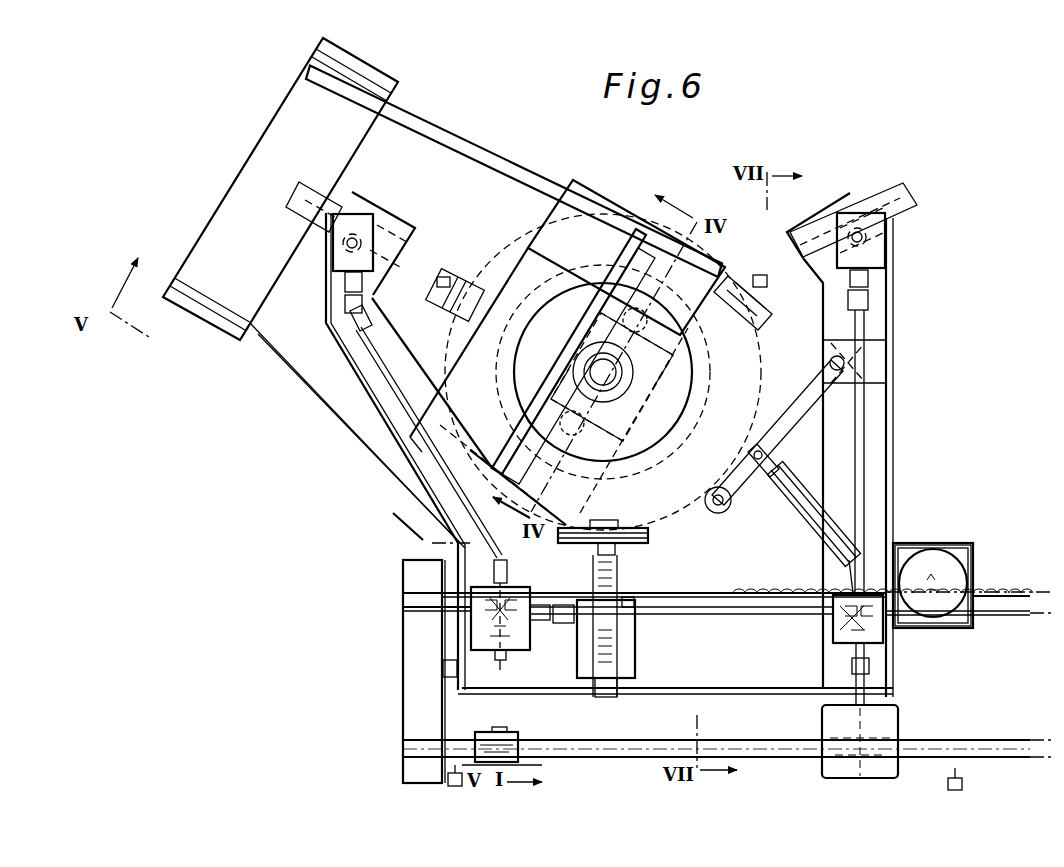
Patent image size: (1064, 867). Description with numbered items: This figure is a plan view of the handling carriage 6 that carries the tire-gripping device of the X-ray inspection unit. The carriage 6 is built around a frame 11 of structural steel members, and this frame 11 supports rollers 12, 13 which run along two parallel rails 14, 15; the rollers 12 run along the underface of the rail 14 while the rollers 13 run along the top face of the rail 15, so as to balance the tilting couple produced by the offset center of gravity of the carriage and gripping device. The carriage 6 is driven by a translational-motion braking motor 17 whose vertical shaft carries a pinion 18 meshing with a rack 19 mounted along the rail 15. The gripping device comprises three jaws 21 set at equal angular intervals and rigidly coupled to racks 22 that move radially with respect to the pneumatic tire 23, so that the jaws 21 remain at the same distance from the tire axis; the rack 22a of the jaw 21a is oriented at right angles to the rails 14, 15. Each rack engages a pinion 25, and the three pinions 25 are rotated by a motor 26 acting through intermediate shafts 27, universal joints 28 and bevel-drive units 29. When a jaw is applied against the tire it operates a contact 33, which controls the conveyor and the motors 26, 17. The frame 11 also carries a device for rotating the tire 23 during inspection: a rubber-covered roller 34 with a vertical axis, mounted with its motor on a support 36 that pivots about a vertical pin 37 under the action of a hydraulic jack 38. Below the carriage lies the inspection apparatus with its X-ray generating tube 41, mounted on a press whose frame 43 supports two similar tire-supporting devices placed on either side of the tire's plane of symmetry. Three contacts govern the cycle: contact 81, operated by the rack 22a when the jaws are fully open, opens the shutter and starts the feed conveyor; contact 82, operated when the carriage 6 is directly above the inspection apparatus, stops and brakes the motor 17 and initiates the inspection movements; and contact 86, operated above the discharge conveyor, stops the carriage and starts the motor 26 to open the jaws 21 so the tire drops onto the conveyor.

The handling carriage 6 is at (924, 636).
The frame 11 is at (410, 450).
The rollers 12 is at (490, 732).
The rollers 13 is at (523, 627).
The rail 14 is at (997, 747).
The rail 15 is at (1015, 614).
The translational-motion braking motor 17 is at (960, 568).
The pinion 18 is at (931, 576).
The rack 19 is at (988, 592).
The jaws 21 is at (474, 292).
The jaw 21a is at (607, 523).
The racks 22 is at (297, 197).
The rack 22a is at (614, 576).
The pneumatic tire 23 is at (502, 250).
The pinion 25 is at (340, 247).
The motor 26 is at (895, 720).
The intermediate shafts 27 is at (377, 363).
The universal joints 28 is at (346, 318).
The bevel-drive units 29 is at (355, 214).
The contact 33 is at (455, 272).
The rubber-covered roller 34 is at (723, 513).
The support 36 is at (777, 433).
The vertical pin 37 is at (829, 361).
The hydraulic jack 38 is at (794, 503).
The X-ray generating tube 41 is at (613, 374).
The frame of the press 43 is at (473, 148).
The contact 81 is at (648, 599).
The contact 82 is at (446, 779).
The contact 86 is at (963, 781).